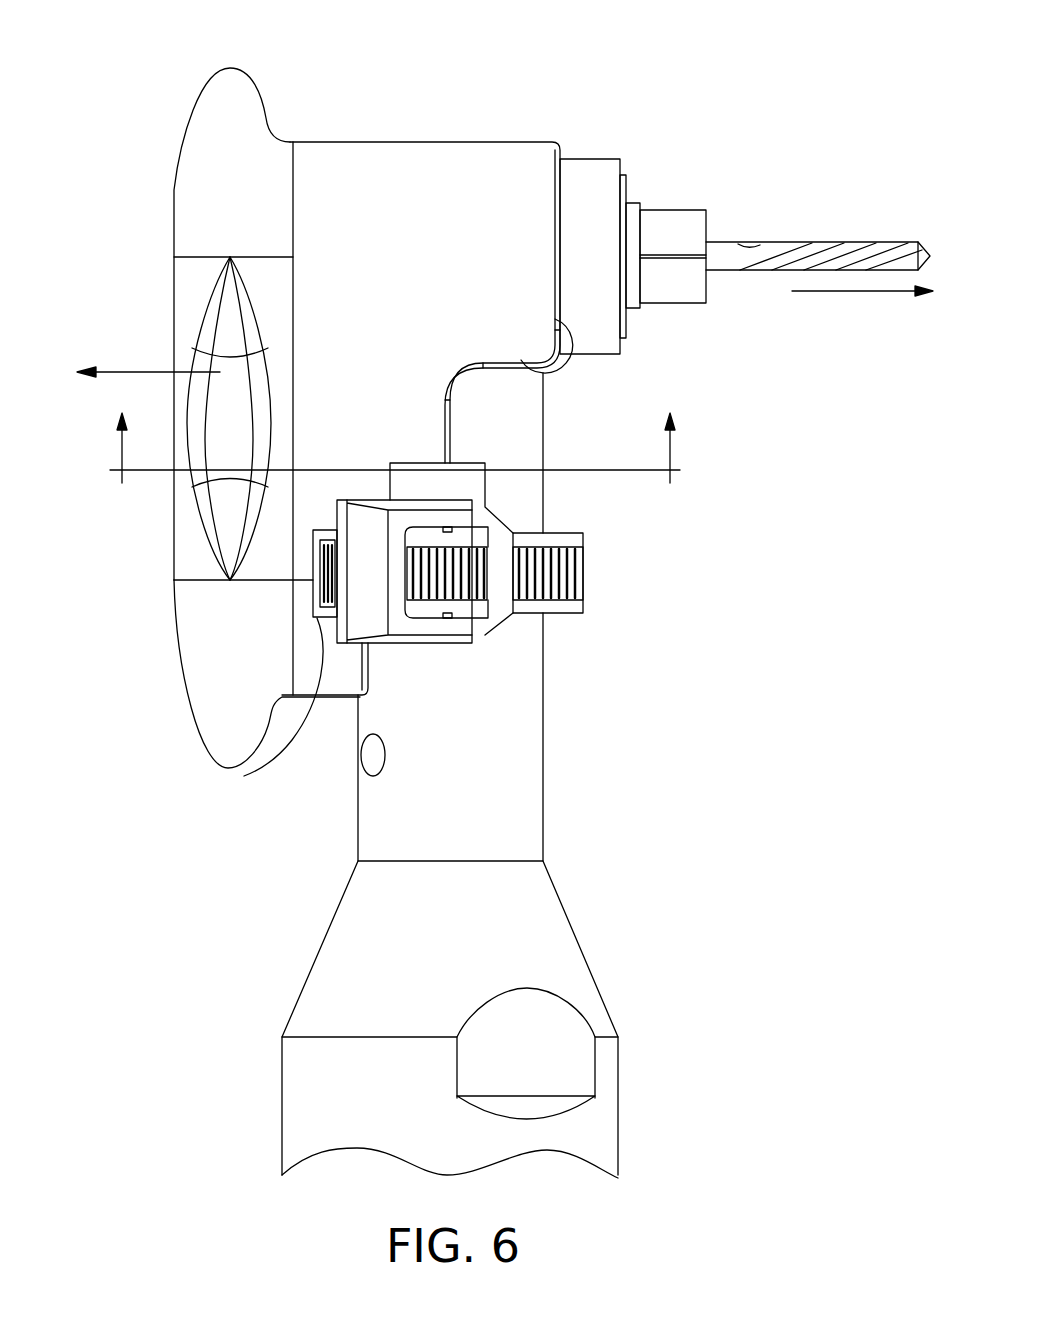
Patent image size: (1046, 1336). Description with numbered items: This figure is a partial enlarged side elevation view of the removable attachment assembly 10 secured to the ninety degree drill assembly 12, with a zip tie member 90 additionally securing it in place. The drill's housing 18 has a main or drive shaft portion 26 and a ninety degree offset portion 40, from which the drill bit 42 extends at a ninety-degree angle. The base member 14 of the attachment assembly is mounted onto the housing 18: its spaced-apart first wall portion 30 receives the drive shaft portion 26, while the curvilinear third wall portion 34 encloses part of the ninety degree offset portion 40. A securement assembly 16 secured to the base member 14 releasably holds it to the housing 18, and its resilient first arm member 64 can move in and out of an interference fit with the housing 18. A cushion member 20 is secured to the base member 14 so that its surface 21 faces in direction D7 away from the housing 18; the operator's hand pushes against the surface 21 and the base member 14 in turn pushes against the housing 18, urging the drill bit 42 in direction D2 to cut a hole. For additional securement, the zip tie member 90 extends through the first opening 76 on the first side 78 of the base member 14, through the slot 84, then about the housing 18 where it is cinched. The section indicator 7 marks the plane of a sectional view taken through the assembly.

The removable attachment assembly 10 is at (503, 65).
The ninety degree drill assembly 12 is at (590, 905).
The base member 14 is at (473, 190).
The securement assembly 16 is at (470, 452).
The housing 18 is at (490, 710).
The cushion member 20 is at (208, 143).
The surface 21 is at (177, 193).
The drive shaft portion 26 is at (477, 772).
The first wall portion 30 is at (438, 320).
The third wall portion 34 is at (435, 150).
The ninety degree offset portion 40 is at (600, 180).
The drill bit 42 is at (805, 240).
The first arm member 64 is at (480, 478).
The first opening 76 is at (264, 707).
The first side 78 is at (302, 596).
The slot 84 is at (318, 522).
The zip tie member 90 is at (502, 545).
The section line 7- 7 is at (399, 451).
The direction D2 is at (832, 295).
The direction D7 is at (148, 368).